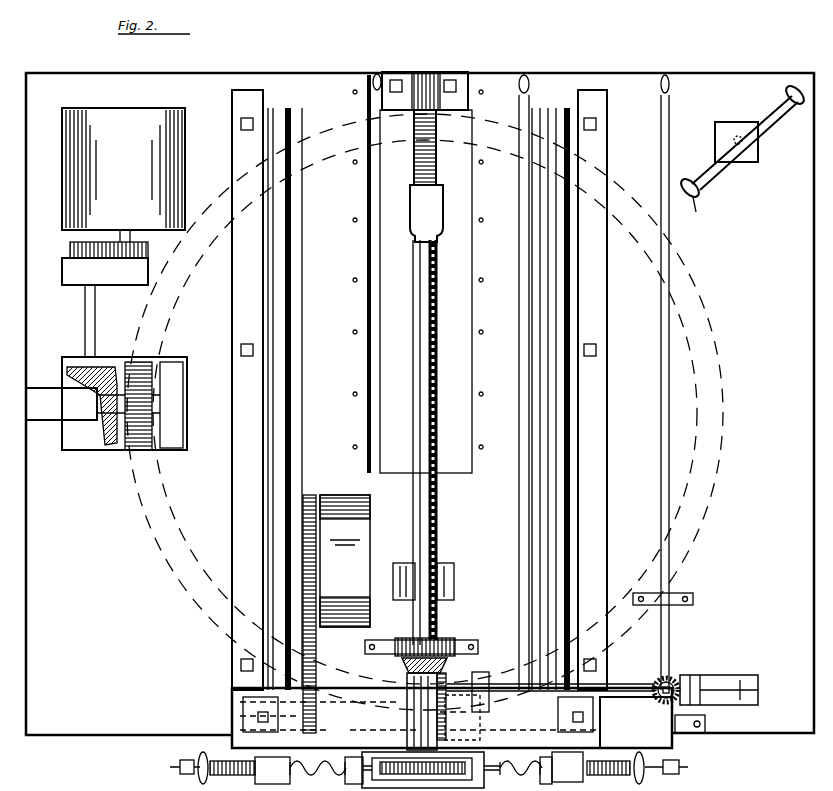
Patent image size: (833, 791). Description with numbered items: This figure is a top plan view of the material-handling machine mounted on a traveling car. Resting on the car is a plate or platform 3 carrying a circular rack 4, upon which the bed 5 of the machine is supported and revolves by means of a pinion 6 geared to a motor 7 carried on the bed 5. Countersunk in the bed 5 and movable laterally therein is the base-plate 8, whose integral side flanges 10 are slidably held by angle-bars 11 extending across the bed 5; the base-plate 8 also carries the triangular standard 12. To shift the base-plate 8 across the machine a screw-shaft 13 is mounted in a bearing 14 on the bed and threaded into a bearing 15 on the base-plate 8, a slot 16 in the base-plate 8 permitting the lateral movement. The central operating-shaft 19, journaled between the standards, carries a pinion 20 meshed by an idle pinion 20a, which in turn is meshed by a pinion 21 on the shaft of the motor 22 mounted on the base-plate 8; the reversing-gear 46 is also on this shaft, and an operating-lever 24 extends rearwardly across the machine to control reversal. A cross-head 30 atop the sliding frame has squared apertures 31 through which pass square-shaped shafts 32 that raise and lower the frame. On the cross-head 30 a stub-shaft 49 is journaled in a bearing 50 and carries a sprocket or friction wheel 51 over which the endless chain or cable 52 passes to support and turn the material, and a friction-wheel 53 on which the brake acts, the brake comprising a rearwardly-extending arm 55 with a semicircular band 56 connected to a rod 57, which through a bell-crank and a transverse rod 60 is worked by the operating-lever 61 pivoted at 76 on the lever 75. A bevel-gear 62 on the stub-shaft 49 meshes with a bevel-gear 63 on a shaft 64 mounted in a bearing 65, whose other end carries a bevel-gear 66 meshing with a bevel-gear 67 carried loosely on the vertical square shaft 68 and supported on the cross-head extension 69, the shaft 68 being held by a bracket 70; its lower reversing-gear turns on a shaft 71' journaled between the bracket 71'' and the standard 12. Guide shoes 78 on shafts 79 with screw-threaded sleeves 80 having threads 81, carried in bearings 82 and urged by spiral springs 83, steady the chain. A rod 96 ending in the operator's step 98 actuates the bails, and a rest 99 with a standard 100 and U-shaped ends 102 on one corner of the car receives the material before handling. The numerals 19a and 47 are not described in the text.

The plate or platform 3 is at (118, 368).
The circular rack 4 is at (720, 410).
The body portion or bed 5 is at (424, 398).
The pinion 6 is at (150, 395).
The motor 7 is at (123, 175).
The base-plate 8 is at (405, 269).
The side flanges 10 is at (245, 98).
The angle-bars 11 is at (246, 496).
The triangular standard 12 is at (560, 530).
The screw-shaft 13 is at (440, 305).
The bearing 14 is at (442, 74).
The bearing 15 is at (446, 560).
The slot or cut-away portion 16 is at (426, 291).
The central operating-shaft 19 is at (332, 728).
The bearing 19a is at (342, 697).
The pinion 20 is at (232, 735).
The idle pinion 20a is at (300, 652).
The pinion 21 is at (305, 572).
The motor 22 is at (345, 561).
The operating-lever 24 is at (378, 74).
The cross-head 30 is at (354, 728).
The squared apertures 31 is at (250, 712).
The square-shaped shafts 32 is at (260, 712).
The reversing-gear 46 is at (528, 743).
The guide rod 47 is at (519, 480).
The stub-shaft 49 is at (420, 665).
The bearing 50 is at (440, 728).
The sprocket or friction wheel 51 is at (440, 768).
The endless chain or cable 52 is at (450, 770).
The friction-wheel 53 is at (432, 640).
The rearwardly-extending arm 55 is at (372, 649).
The semicircular band 56 is at (420, 640).
The rod 57 is at (508, 645).
The rod 60 is at (612, 632).
The operating-lever 61 is at (665, 456).
The bevel-gear 62 is at (410, 678).
The bevel-gear 63 is at (448, 668).
The shaft 64 is at (470, 735).
The bearing 65 is at (482, 670).
The bevel-gear 66 is at (676, 680).
The bevel-gear 67 is at (690, 680).
The vertical square shaft 68 is at (636, 722).
The extension 69 is at (668, 748).
The bracket 70 is at (551, 701).
The shaft 71' is at (742, 713).
The bracket 71'' is at (763, 666).
The lever 75 is at (670, 572).
The pivot 76 is at (668, 676).
The shoes 78 is at (431, 778).
The shafts 79 is at (452, 774).
The sleeves 80 is at (292, 772).
The screw-threads 81 is at (210, 768).
The bearings 82 is at (421, 771).
The spiral springs 83 is at (325, 772).
The rod 96 is at (418, 277).
The step 98 is at (445, 205).
The rest 99 is at (726, 160).
The standard 100 is at (760, 152).
The U-shaped upper ends 102 is at (790, 90).